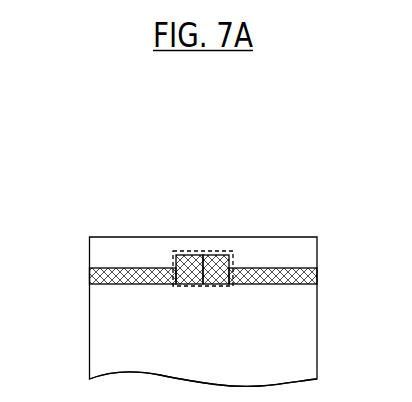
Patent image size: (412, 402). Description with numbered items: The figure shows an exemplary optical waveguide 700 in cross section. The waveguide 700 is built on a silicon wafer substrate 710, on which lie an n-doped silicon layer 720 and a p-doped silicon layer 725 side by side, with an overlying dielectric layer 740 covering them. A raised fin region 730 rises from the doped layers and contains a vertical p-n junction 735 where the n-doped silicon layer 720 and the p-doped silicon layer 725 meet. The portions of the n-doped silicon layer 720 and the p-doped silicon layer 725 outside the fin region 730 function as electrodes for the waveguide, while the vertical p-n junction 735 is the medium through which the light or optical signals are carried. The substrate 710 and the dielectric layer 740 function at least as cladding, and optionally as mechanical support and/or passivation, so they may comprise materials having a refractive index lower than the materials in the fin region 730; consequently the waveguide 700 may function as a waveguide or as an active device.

The optical waveguide 700 is at (185, 154).
The silicon wafer substrate 710 is at (282, 357).
The n-doped silicon layer 720 is at (97, 275).
The p-doped silicon layer 725 is at (309, 275).
The fin region 730 is at (190, 287).
The vertical p-n junction 735 is at (205, 252).
The dielectric layer 740 is at (278, 252).